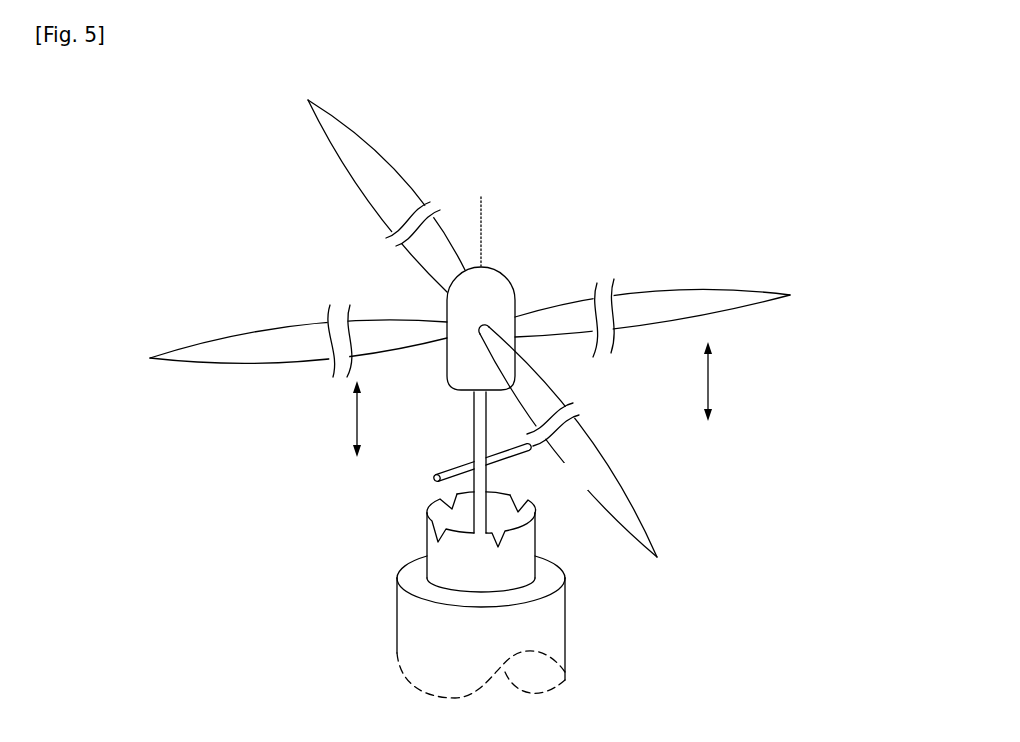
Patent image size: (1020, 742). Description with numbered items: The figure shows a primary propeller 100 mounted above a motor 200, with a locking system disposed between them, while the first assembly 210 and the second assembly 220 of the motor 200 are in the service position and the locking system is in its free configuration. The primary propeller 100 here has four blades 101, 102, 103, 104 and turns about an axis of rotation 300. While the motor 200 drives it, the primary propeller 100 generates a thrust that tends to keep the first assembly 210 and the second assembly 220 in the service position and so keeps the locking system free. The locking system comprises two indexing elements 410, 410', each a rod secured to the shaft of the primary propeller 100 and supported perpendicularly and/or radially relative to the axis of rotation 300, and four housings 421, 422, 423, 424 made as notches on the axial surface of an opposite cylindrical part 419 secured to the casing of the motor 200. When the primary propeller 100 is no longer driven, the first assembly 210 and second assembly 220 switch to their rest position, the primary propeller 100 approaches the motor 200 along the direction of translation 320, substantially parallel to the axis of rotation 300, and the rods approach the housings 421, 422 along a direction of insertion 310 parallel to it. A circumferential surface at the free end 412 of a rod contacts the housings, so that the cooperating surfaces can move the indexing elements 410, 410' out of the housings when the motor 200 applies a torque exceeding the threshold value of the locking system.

The primary propeller 100 is at (492, 328).
The blade 101 is at (702, 300).
The blade 102 is at (219, 350).
The blade 103 is at (644, 518).
The blade 104 is at (378, 178).
The axis of rotation 300 is at (482, 220).
The direction of insertion 310 is at (355, 422).
The direction of translation 320 is at (711, 380).
The first assembly 210 is at (474, 412).
The indexing element 410 is at (508, 448).
The indexing element 410' is at (428, 466).
The free end 412 is at (543, 454).
The cylindrical part 419 is at (473, 528).
The housing 421 is at (526, 497).
The housing 422 is at (424, 530).
The housing 424 is at (428, 500).
The housing 423 is at (565, 578).
The second assembly 220 is at (398, 625).
The motor 200 is at (459, 632).